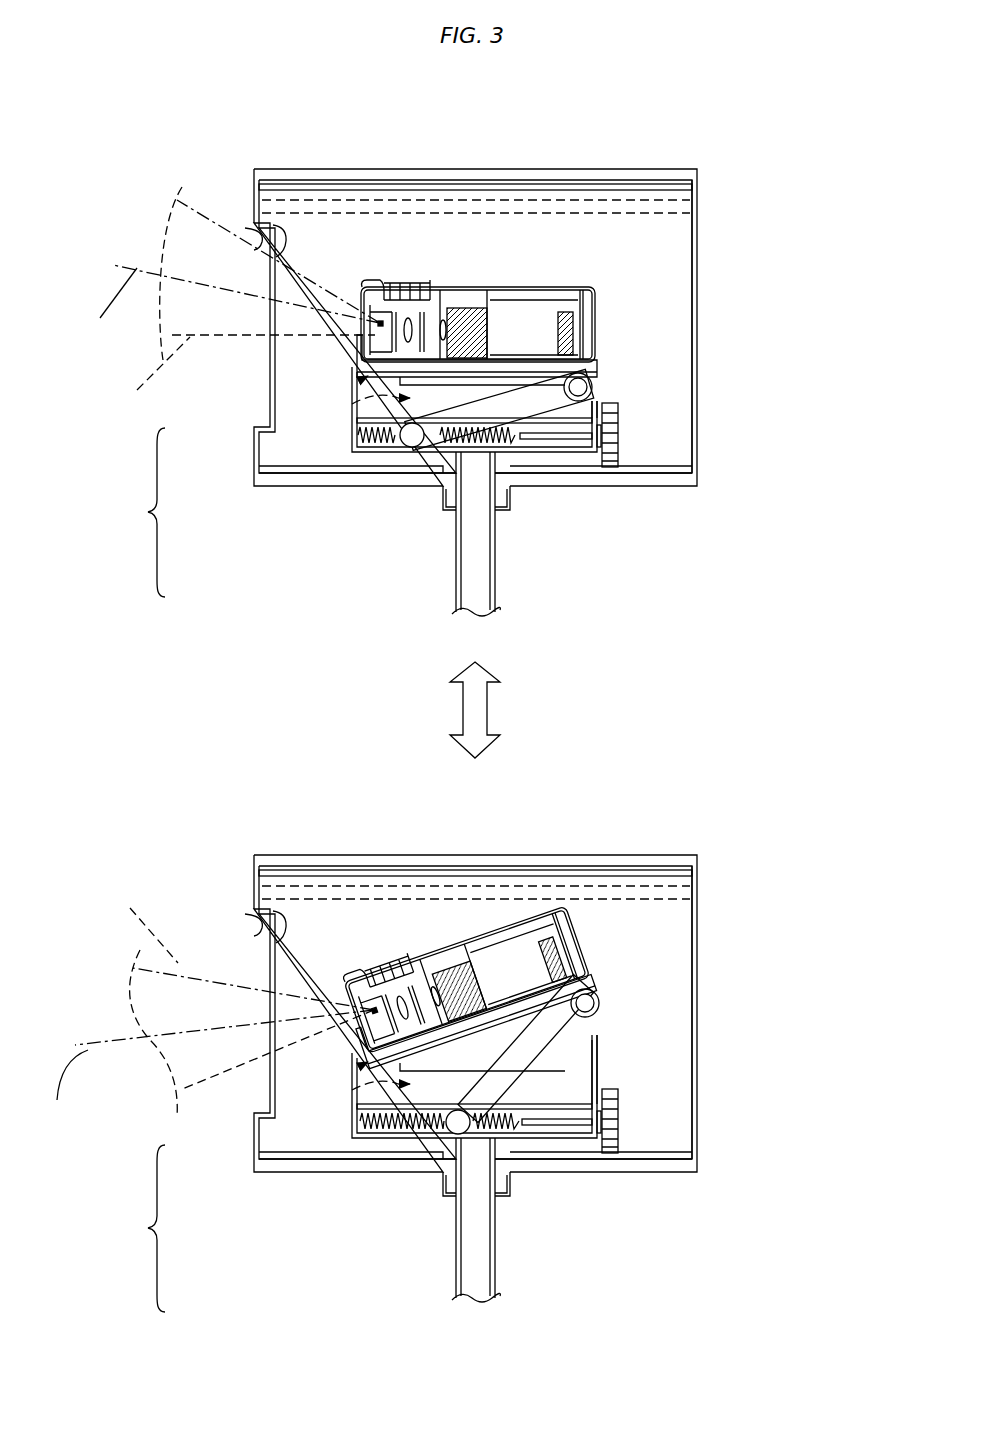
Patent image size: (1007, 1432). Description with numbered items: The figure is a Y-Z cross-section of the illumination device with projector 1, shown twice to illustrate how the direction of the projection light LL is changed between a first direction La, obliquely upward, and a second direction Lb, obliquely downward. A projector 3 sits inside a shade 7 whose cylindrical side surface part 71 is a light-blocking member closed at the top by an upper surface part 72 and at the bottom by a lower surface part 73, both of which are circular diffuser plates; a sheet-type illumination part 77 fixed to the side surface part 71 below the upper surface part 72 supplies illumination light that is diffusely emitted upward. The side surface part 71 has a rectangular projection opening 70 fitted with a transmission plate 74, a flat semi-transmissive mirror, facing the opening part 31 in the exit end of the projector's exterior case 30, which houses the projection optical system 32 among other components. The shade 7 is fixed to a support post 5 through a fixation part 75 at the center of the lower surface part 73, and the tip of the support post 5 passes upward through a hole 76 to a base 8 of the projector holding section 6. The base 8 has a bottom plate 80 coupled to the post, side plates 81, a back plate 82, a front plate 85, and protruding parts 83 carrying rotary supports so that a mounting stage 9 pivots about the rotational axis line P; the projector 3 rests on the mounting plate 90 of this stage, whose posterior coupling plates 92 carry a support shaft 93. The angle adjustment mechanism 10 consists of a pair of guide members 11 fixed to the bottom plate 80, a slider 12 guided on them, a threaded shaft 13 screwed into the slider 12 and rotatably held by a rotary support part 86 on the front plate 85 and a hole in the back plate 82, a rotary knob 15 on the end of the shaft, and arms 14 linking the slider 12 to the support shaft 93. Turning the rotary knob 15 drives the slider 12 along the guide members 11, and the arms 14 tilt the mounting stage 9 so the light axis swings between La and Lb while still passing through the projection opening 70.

The illumination device with projector 1 is at (120, 130).
The projector 3 is at (495, 285).
The support post 5 is at (497, 585).
The projector holding section 6 is at (150, 870).
The shade 7 is at (700, 192).
The base 8 is at (357, 462).
The mounting stage 9 is at (355, 386).
The angle adjustment mechanism 10 is at (375, 401).
The guide member 11 is at (372, 440).
The slider 12 is at (440, 440).
The threaded shaft 13 is at (618, 435).
The arm 14 is at (412, 447).
The rotary knob 15 is at (602, 437).
The exterior case 30 is at (487, 290).
The opening part 31 is at (365, 292).
The projection optical system 32 is at (408, 318).
The projection opening 70 is at (257, 242).
The side surface part 71 is at (257, 222).
The upper surface part 72 is at (612, 183).
The lower surface part 73 is at (653, 472).
The transmission plate 74 is at (340, 300).
The fixation part 75 is at (518, 487).
The hole 76 is at (497, 508).
The illumination part 77 is at (660, 200).
The bottom plate 80 is at (558, 455).
The side plate 81 is at (598, 428).
The back plate 82 is at (598, 418).
The protruding part 83 is at (357, 352).
The front plate 85 is at (362, 426).
The rotary support part 86 is at (385, 411).
The mounting plate 90 is at (550, 372).
The posterior coupling plate 92 is at (586, 382).
The support shaft 93 is at (593, 405).
The rotational axis line P is at (378, 320).
The first direction La is at (228, 273).
The second direction Lb is at (107, 1041).
The projection light LL is at (225, 712).